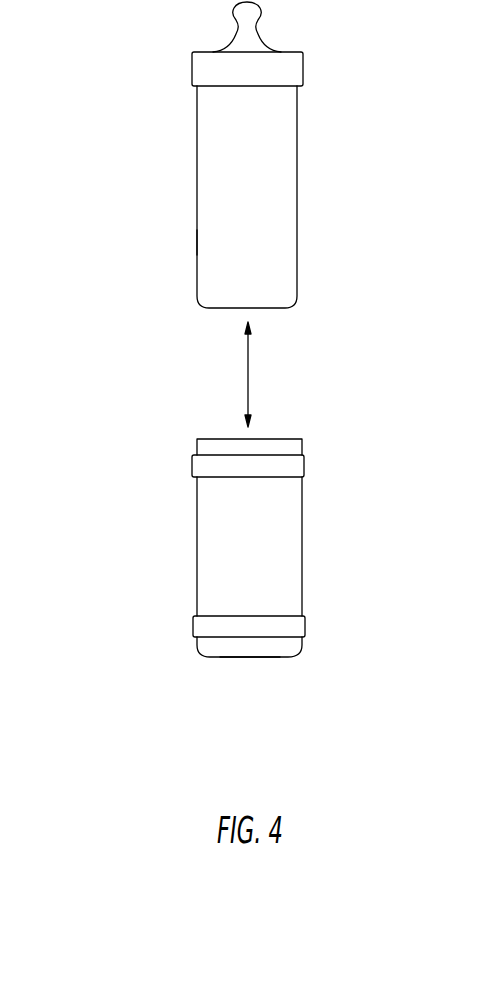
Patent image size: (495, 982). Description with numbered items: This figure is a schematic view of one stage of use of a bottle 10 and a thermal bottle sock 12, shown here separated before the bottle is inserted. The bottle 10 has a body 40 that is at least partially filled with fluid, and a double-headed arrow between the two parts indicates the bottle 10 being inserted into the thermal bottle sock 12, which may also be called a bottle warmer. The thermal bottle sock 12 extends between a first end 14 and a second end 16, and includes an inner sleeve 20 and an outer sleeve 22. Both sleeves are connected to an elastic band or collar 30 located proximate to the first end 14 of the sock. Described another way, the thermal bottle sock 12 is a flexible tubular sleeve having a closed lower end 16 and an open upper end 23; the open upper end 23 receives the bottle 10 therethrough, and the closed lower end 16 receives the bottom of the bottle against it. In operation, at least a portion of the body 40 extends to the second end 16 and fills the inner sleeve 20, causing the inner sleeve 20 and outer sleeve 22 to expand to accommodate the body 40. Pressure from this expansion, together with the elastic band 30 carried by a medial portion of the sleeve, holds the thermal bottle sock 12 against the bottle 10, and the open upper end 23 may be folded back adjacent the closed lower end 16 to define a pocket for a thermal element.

The bottle 10 is at (297, 215).
The body 40 is at (197, 242).
The thermal bottle sock 12 is at (231, 549).
The first end 14 is at (302, 439).
The elastic band 30 is at (304, 468).
The outer sleeve 22 is at (293, 572).
The open upper end 23 is at (195, 622).
The inner sleeve 20 is at (298, 650).
The second end 16 is at (233, 658).